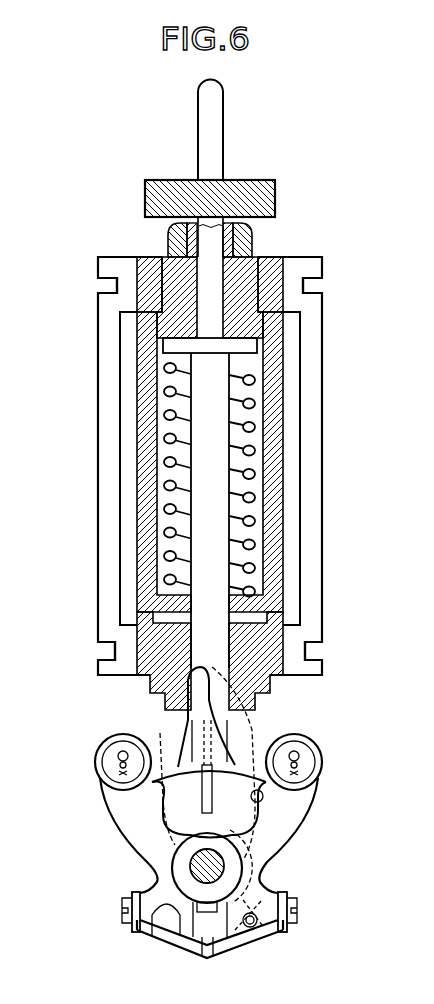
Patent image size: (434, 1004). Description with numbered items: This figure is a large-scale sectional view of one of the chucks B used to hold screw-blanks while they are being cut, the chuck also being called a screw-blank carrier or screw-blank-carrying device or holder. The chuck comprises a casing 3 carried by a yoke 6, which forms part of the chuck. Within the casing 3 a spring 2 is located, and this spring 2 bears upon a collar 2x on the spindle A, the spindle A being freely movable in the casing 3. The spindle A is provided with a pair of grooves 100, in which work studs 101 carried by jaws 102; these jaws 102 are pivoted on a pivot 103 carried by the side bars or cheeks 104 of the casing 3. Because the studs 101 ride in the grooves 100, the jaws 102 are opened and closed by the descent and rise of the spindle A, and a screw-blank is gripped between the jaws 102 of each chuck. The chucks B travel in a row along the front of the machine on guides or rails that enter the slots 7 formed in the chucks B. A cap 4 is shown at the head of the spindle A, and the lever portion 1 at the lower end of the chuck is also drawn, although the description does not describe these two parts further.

The spindle A is at (213, 133).
The cap 4 is at (275, 193).
The yoke 6 is at (303, 519).
The chuck B is at (62, 492).
The slots 7 is at (100, 288).
The casing 3 is at (287, 410).
The collar 2x is at (243, 345).
The spring 2 is at (250, 476).
The lever 1 is at (197, 702).
The grooves 100 is at (172, 751).
The studs 101 is at (152, 796).
The jaws 102 is at (132, 826).
The pivot 103 is at (196, 864).
The side bars or cheeks 104 is at (253, 873).